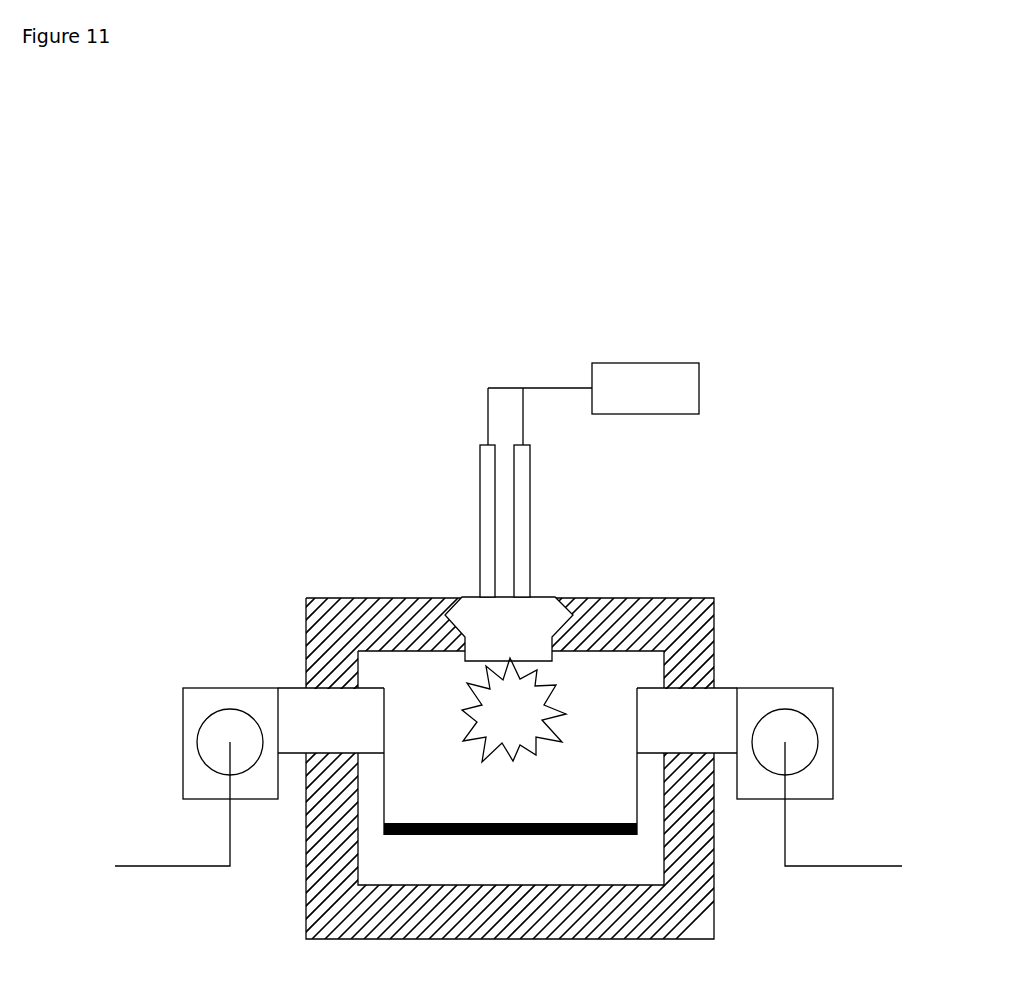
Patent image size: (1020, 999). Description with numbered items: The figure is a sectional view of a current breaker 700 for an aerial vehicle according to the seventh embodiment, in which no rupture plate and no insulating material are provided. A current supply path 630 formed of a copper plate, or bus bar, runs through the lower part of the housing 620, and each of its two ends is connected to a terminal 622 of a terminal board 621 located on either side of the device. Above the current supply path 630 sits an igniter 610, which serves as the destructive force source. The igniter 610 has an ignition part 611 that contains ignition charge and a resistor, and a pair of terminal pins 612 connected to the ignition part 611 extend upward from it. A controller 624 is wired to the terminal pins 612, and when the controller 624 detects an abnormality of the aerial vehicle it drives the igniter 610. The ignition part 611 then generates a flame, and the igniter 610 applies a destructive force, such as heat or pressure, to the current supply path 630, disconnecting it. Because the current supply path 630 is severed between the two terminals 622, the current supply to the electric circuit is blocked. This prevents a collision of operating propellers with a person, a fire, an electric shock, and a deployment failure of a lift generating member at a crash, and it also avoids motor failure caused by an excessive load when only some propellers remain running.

The current breaker for an aerial vehicle 700 is at (531, 238).
The igniter 610 is at (503, 553).
The ignition part 611 is at (470, 603).
The terminal pins 612 is at (488, 472).
The chamber 620 is at (342, 603).
The terminal board 621 is at (206, 698).
The terminal 622 is at (178, 870).
The controller 624 is at (630, 363).
The current supply path 630 is at (490, 838).